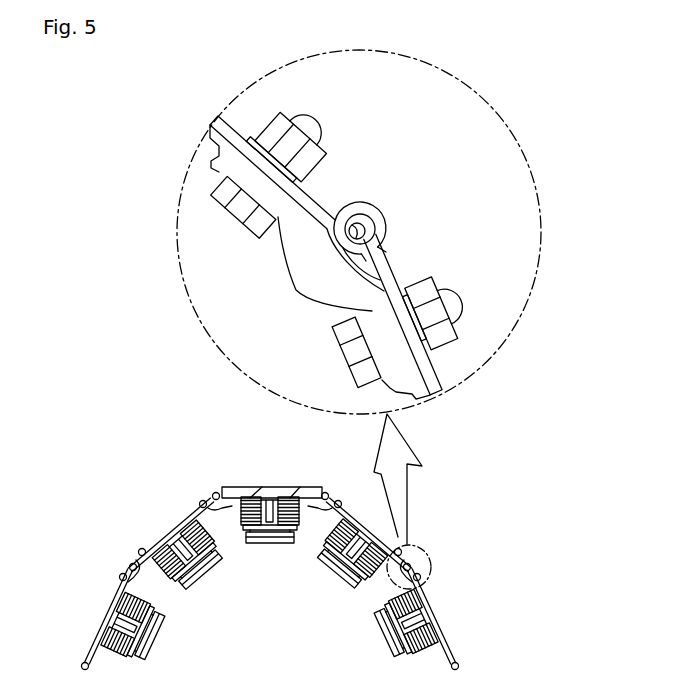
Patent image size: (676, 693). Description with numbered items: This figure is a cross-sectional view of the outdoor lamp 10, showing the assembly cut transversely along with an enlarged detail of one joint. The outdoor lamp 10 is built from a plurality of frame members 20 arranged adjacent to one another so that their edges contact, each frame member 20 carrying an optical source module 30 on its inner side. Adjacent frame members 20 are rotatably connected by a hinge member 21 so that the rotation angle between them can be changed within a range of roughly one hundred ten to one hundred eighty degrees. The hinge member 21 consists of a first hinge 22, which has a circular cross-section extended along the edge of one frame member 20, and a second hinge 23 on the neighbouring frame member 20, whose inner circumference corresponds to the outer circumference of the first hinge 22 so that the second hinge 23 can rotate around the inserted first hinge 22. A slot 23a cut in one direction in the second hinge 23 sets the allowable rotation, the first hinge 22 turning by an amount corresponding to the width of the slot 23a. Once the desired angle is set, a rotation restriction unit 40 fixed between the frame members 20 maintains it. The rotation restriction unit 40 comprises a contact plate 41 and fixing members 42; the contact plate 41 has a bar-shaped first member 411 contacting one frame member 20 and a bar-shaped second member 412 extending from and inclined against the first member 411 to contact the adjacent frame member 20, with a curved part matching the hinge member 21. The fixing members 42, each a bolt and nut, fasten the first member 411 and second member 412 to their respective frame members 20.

The outdoor lamp 10 is at (319, 573).
The frame member 20 is at (223, 118).
The hinge member 21 is at (399, 204).
The first hinge 22 is at (370, 225).
The second hinge 23 is at (360, 213).
The slot 23a is at (411, 237).
The optical source module 30 is at (392, 642).
The rotation restriction unit 40 is at (240, 262).
The contact plate 41 is at (245, 281).
The first member 411 is at (254, 198).
The second member 412 is at (375, 312).
The fixing member 42 is at (275, 133).